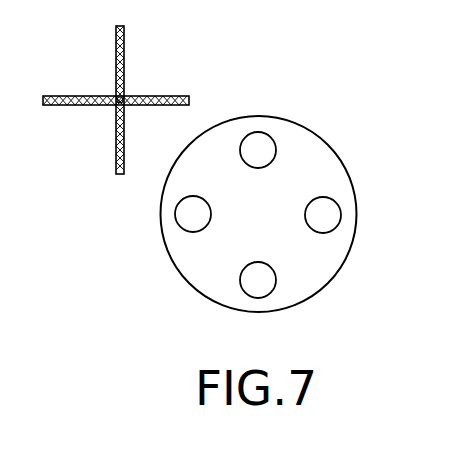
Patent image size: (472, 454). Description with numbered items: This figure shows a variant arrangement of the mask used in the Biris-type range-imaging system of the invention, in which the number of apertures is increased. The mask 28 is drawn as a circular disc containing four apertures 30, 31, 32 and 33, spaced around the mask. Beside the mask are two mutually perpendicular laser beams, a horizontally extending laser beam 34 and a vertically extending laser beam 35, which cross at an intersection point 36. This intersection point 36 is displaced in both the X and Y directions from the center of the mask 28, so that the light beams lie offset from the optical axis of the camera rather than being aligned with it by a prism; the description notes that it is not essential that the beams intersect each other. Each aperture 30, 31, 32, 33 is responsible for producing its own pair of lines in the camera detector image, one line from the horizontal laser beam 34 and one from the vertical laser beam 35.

The mask 28 is at (312, 162).
The aperture 30 is at (262, 147).
The aperture 31 is at (323, 212).
The aperture 32 is at (263, 282).
The aperture 33 is at (200, 215).
The laser beam 34 is at (67, 105).
The laser beam 35 is at (124, 48).
The intersection point 36 is at (116, 98).